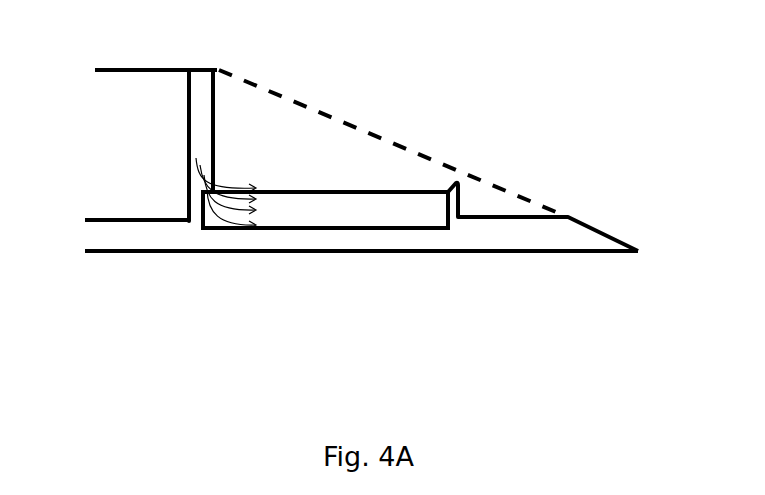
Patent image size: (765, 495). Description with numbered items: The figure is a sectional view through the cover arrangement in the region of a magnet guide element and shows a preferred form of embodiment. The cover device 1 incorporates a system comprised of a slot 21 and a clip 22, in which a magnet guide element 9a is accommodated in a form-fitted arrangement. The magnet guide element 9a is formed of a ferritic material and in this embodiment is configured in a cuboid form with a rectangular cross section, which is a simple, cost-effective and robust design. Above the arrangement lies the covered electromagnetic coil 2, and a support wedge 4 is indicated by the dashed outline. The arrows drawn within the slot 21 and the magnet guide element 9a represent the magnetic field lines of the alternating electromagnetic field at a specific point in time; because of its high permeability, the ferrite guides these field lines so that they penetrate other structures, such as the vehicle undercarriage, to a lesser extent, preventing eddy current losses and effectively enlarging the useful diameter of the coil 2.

The cover device 1 is at (600, 253).
The electromagnetic coil 2 is at (113, 97).
The support wedge 4 is at (373, 135).
The magnet guide element 9a is at (280, 208).
The slot 21 is at (175, 179).
The clip 22 is at (455, 222).